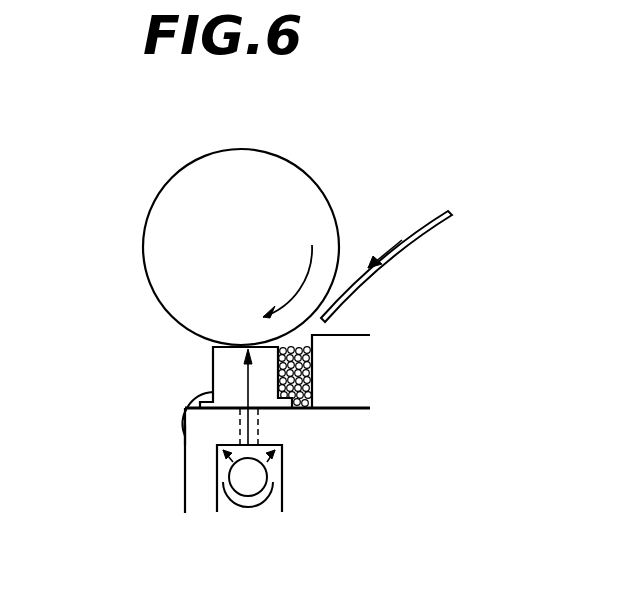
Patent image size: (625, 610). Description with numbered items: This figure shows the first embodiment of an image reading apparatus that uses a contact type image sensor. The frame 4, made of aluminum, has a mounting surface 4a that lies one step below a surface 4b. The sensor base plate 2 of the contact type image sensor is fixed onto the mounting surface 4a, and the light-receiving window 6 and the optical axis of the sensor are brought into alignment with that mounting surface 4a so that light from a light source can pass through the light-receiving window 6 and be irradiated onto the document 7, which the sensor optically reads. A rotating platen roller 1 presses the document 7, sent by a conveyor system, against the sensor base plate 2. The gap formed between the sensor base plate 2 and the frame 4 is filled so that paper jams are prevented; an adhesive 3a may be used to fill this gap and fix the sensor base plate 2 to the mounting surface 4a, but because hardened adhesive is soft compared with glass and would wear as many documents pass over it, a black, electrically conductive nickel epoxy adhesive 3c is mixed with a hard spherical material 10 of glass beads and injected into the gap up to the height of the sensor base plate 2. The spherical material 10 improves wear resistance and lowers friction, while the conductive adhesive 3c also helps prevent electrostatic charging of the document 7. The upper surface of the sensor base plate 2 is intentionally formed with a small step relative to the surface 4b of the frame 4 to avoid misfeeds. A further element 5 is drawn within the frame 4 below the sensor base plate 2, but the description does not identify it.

The platen roller 1 is at (297, 172).
The sensor base plate 2 is at (225, 368).
The adhesive 3a is at (195, 398).
The nickel epoxy adhesive 3c is at (313, 382).
The frame 4 is at (198, 480).
The mounting surface 4a is at (185, 433).
The surface 4b is at (358, 328).
The ball 5 is at (260, 473).
The light-receiving window 6 is at (258, 425).
The document 7 is at (427, 232).
The spherical material 10 is at (313, 397).